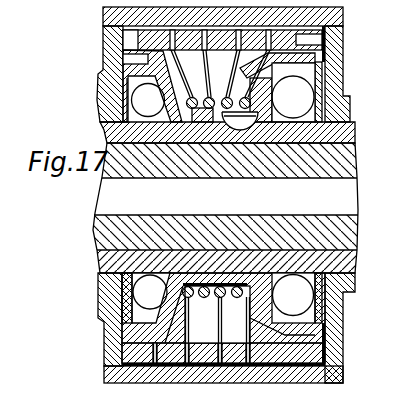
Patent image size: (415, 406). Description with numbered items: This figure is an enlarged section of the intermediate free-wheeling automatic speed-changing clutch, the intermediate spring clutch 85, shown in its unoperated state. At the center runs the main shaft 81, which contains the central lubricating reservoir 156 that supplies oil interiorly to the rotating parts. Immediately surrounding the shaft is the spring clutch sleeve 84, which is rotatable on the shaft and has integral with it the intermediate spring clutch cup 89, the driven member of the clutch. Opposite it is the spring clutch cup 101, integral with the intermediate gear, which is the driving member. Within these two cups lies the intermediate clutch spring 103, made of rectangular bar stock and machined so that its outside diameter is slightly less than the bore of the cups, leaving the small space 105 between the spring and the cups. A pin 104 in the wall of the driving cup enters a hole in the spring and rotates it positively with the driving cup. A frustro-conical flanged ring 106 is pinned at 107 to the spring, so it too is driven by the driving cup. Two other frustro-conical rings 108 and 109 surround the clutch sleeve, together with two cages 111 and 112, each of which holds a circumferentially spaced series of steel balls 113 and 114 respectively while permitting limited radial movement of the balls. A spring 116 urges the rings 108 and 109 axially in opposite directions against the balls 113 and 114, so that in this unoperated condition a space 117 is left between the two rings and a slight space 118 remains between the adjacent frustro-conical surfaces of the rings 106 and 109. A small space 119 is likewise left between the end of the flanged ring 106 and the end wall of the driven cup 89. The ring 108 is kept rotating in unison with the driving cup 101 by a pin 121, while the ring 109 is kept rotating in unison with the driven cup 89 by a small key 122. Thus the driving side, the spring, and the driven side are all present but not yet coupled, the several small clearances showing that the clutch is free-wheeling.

The main shaft 81 is at (338, 237).
The spring clutch sleeve 84 is at (282, 133).
The intermediate spring clutch 85 is at (80, 210).
The intermediate spring clutch cup 89 is at (303, 21).
The spring clutch cup 101 is at (107, 18).
The intermediate clutch spring 103 is at (270, 360).
The pin 104 is at (115, 41).
The space 105 is at (222, 366).
The frustro-conical flanged ring 106 is at (320, 62).
The pin 107 is at (315, 40).
The frustro-conical ring 108 is at (104, 78).
The frustro-conical ring 109 is at (327, 75).
The cage 111 is at (137, 88).
The cage 112 is at (308, 77).
The steel balls 113 is at (143, 293).
The steel balls 114 is at (300, 292).
The spring 116 is at (192, 10).
The space 117 is at (210, 288).
The space 118 is at (330, 327).
The space 119 is at (325, 353).
The pin 121 is at (115, 62).
The key 122 is at (239, 127).
The reservoir 156 is at (226, 196).